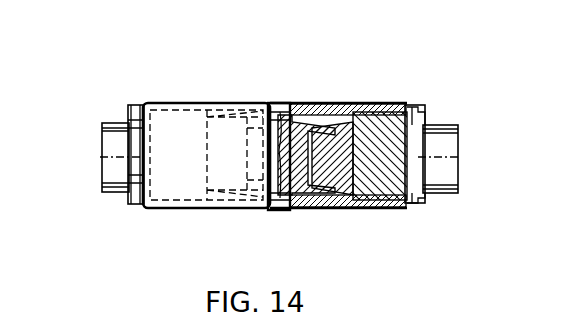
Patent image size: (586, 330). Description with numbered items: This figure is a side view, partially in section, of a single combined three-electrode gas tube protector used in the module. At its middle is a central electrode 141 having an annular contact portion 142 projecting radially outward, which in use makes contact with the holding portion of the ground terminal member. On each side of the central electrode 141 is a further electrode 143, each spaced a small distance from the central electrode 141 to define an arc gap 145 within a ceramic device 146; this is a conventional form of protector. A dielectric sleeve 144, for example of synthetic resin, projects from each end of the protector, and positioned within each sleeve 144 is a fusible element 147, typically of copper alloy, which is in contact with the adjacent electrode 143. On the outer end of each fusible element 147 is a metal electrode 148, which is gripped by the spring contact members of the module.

The central electrode 141 is at (313, 110).
The annular contact portion 142 is at (282, 130).
The further electrode 143 is at (232, 110).
The dielectric sleeve 144 is at (176, 104).
The arc gap 145 is at (242, 197).
The ceramic device 146 is at (258, 110).
The fusible element 147 is at (157, 101).
The metal electrode 148 is at (118, 128).